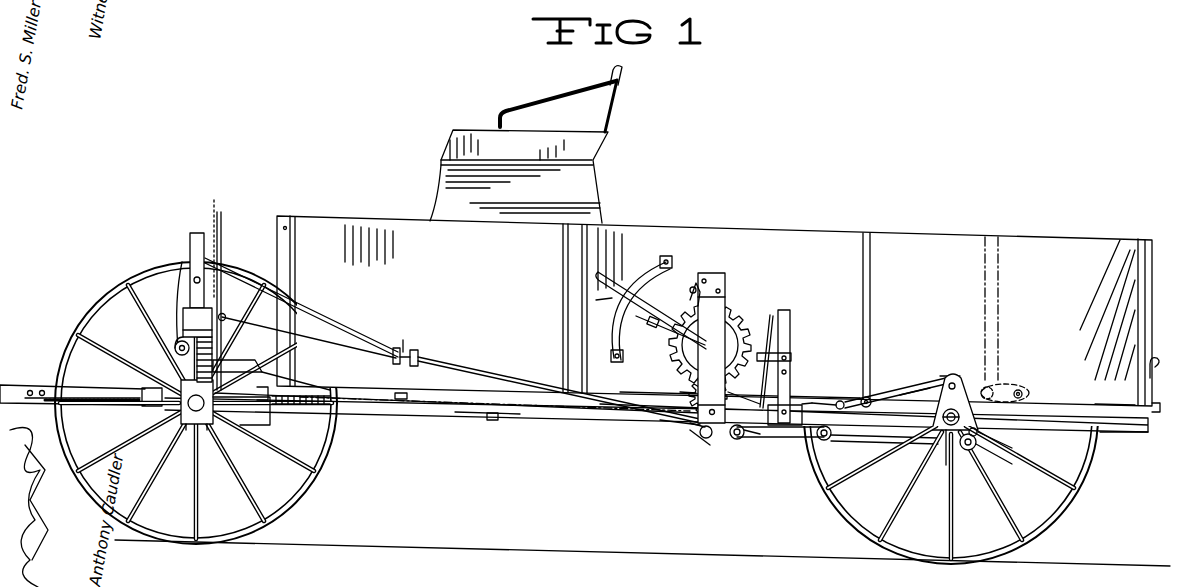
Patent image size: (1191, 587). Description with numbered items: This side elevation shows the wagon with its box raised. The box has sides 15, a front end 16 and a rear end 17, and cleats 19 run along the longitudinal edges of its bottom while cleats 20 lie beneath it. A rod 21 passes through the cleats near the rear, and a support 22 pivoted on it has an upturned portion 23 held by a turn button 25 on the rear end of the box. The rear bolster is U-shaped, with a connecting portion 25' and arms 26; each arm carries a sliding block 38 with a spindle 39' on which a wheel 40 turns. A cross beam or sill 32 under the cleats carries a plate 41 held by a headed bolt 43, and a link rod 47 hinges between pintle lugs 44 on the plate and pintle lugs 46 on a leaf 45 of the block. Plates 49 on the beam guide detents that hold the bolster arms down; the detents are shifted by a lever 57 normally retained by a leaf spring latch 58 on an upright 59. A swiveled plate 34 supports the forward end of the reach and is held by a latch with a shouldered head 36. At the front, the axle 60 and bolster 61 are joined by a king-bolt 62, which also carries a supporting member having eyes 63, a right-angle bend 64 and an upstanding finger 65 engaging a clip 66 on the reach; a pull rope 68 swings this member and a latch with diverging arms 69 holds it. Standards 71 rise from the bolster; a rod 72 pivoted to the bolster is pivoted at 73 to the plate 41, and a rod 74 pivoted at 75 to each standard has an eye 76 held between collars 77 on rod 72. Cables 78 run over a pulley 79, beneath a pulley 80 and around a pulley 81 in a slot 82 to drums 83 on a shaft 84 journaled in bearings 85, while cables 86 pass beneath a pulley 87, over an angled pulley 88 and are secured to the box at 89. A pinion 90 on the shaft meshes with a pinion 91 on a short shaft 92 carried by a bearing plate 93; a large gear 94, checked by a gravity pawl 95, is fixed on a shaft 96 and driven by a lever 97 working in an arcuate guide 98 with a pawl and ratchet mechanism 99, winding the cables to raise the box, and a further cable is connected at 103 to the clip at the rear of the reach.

The sides 15 is at (800, 244).
The front end 16 is at (283, 228).
The rear end 17 is at (1150, 298).
The cleat 19 is at (1108, 404).
The cleats 20 is at (360, 412).
The rod 21 is at (880, 396).
The support 22 is at (1118, 434).
The upwardly bent rear end portion 23 is at (1156, 370).
The turn button 25 is at (1169, 408).
The connecting portion 25' is at (1012, 445).
The arms 26 is at (918, 392).
The cross beam or sill 32 is at (768, 438).
The plate 34 is at (482, 416).
The shouldered head 36 is at (494, 421).
The block 38 is at (962, 380).
The spindle or stub shaft 39' is at (932, 459).
The wheel 40 is at (1062, 520).
The plate 41 is at (745, 437).
The headed bolt 43 is at (784, 428).
The pintle lugs 44 is at (733, 440).
The leaf 45 is at (953, 428).
The pintle lugs 46 is at (976, 448).
The link rod 47 is at (905, 445).
The plates 49 is at (804, 402).
The lever 57 is at (769, 322).
The leaf spring latch 58 is at (792, 356).
The upright 59 is at (790, 314).
The front axle 60 is at (160, 436).
The front bolster 61 is at (183, 326).
The king-bolt 62 is at (192, 432).
The eye 63 is at (200, 430).
The right-angle bent portion 64 is at (255, 427).
The upstanding hook or finger 65 is at (262, 368).
The clip 66 is at (292, 408).
The pull rope 68 is at (222, 240).
The diverging arms 69 is at (285, 372).
The standards 71 is at (197, 233).
The rod 72 is at (470, 372).
The pivot 73 is at (748, 436).
The rod 74 is at (322, 318).
The pivot 75 is at (215, 220).
The eye 76 is at (408, 348).
The collars 77 is at (393, 362).
The cables 78 is at (224, 315).
The pulley 79 is at (183, 266).
The pulley 80 is at (175, 350).
The pulley 81 is at (398, 401).
The slot 82 is at (416, 402).
The drums 83 is at (698, 430).
The shaft 84 is at (702, 440).
The bearings 85 is at (670, 425).
The cables 86 is at (905, 392).
The pulley 87 is at (1022, 390).
The pulley 88 is at (948, 374).
The cable attachment 89 is at (836, 402).
The pinion 90 is at (656, 485).
The pinion 91 is at (690, 390).
The short shaft 92 is at (708, 385).
The bearing plate 93 is at (718, 276).
The gear 94 is at (733, 320).
The gravity pawl 95 is at (692, 284).
The shaft 96 is at (700, 346).
The lever 97 is at (620, 283).
The arcuate guide 98 is at (614, 302).
The pawl and ratchet mechanism 99 is at (598, 300).
The cable connection 103 is at (1015, 466).